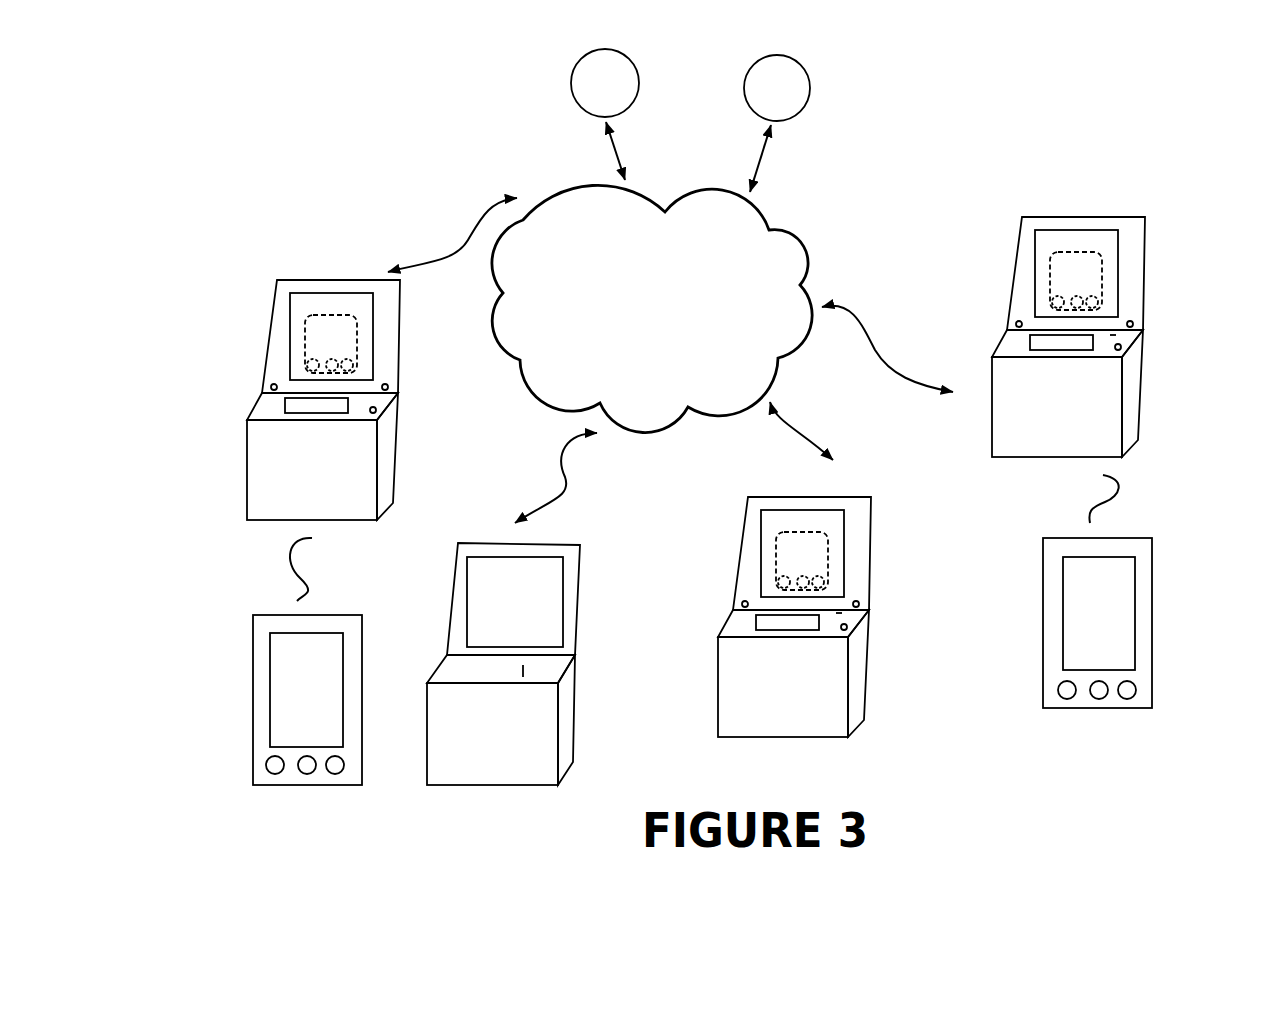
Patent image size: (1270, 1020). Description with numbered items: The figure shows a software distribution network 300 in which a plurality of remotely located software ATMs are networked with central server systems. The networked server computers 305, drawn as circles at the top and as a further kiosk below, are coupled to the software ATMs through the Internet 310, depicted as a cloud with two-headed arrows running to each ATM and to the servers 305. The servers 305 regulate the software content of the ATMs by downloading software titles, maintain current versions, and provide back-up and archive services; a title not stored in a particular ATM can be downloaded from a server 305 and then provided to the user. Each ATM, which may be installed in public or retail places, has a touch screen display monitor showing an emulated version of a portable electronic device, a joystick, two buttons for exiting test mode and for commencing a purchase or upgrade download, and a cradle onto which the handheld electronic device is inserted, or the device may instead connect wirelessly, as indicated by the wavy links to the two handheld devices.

The software distribution network 300 is at (252, 94).
The networked server computer 305 is at (588, 95).
The Internet 310 is at (670, 330).